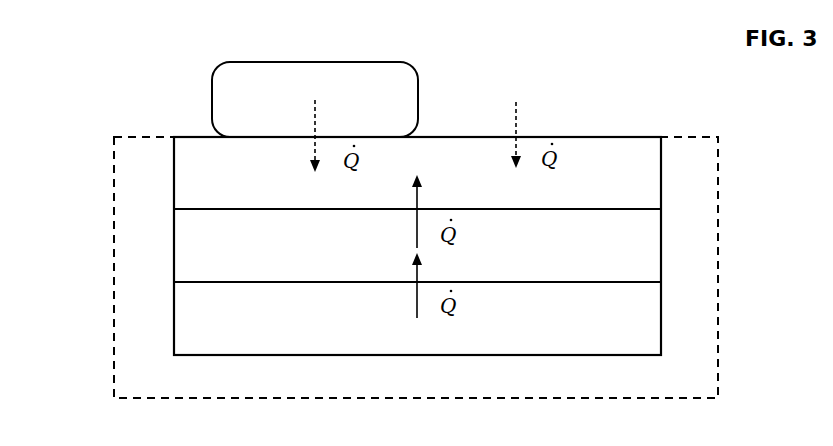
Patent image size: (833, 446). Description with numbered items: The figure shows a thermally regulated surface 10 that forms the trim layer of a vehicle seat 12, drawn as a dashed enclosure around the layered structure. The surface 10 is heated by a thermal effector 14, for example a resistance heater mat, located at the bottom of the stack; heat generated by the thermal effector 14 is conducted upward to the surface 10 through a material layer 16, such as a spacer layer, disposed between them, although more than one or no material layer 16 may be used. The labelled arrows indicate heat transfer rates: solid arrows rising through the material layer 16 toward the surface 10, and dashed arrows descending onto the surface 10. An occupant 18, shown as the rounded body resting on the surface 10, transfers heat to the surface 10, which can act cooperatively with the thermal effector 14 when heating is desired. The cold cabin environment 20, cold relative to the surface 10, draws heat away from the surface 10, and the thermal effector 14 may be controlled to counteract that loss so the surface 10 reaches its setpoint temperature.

The thermally regulated surface 10 is at (603, 137).
The vehicle seat 12 is at (108, 216).
The thermal effector 14 is at (661, 318).
The material layer 16 is at (661, 247).
The occupant 18 is at (212, 98).
The cold cabin environment 20 is at (532, 73).